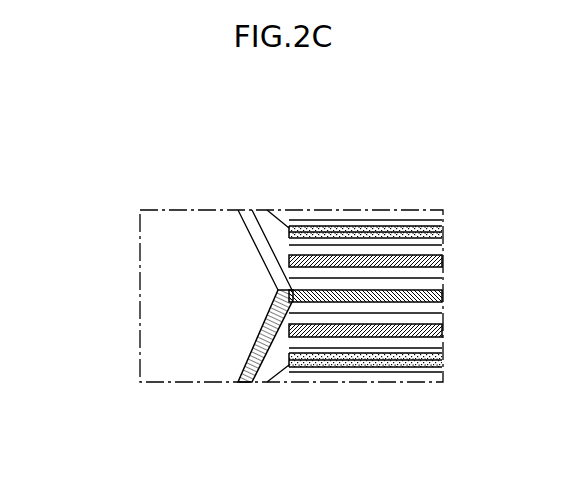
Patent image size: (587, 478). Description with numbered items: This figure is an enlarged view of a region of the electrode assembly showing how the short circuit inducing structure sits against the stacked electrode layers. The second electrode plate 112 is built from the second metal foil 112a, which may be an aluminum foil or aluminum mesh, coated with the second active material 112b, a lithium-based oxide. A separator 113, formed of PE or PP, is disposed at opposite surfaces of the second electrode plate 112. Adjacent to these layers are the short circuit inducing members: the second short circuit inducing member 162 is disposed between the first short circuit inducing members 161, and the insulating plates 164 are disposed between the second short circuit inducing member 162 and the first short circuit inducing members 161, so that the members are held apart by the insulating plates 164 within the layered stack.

The second electrode plate 112 is at (357, 165).
The second metal foil 112a is at (315, 238).
The second active material 112b is at (277, 136).
The separator 113 is at (423, 245).
The first short circuit inducing members 161 is at (443, 330).
The second short circuit inducing member 162 is at (250, 252).
The insulating plates 164 is at (315, 313).